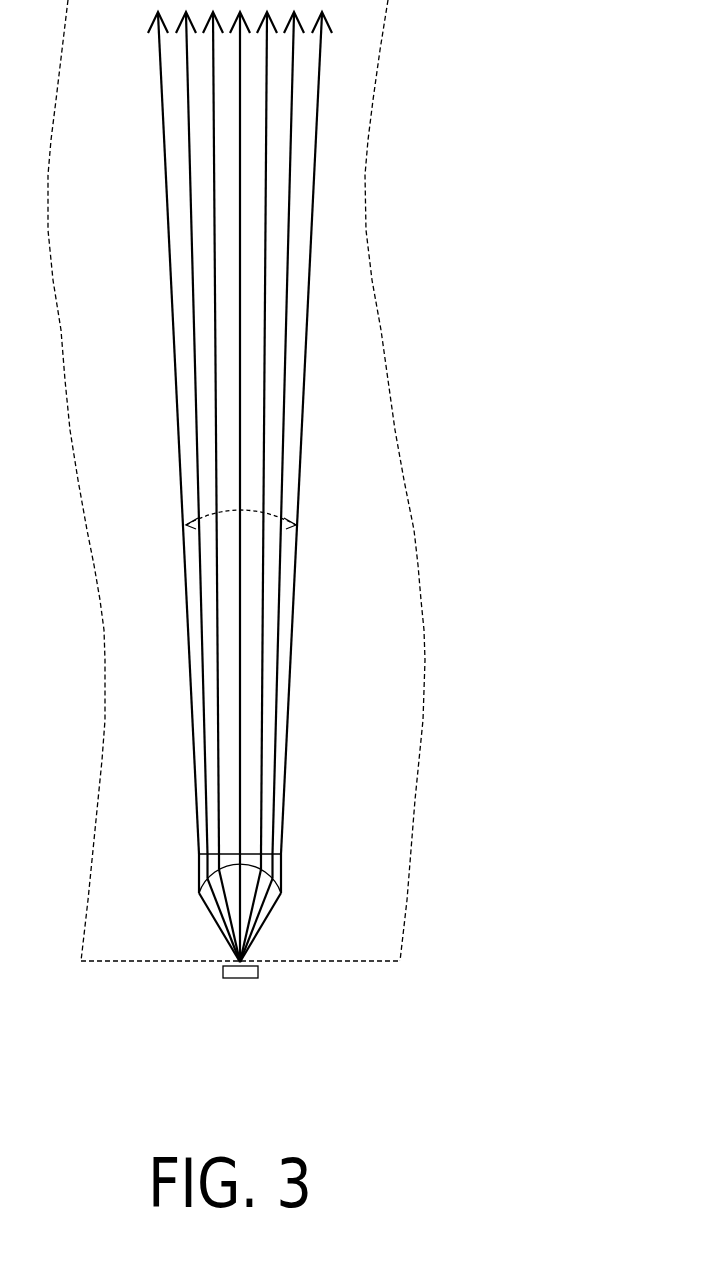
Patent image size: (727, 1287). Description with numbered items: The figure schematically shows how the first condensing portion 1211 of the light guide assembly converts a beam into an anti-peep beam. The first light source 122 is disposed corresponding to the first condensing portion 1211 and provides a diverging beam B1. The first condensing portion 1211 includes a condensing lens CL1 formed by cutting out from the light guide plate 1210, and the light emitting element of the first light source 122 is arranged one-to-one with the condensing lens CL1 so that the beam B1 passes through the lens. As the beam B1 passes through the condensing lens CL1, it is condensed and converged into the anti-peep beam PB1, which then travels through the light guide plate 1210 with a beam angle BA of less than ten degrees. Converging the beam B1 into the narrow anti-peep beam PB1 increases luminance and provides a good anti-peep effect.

The light guide plate 1210 is at (358, 672).
The anti-peep beam PB1 is at (322, 130).
The beam angle BA is at (287, 507).
The condensing lens CL1 is at (409, 882).
The first condensing portion 1211 is at (285, 882).
The beam B1 is at (270, 930).
The first light source 122 is at (251, 969).